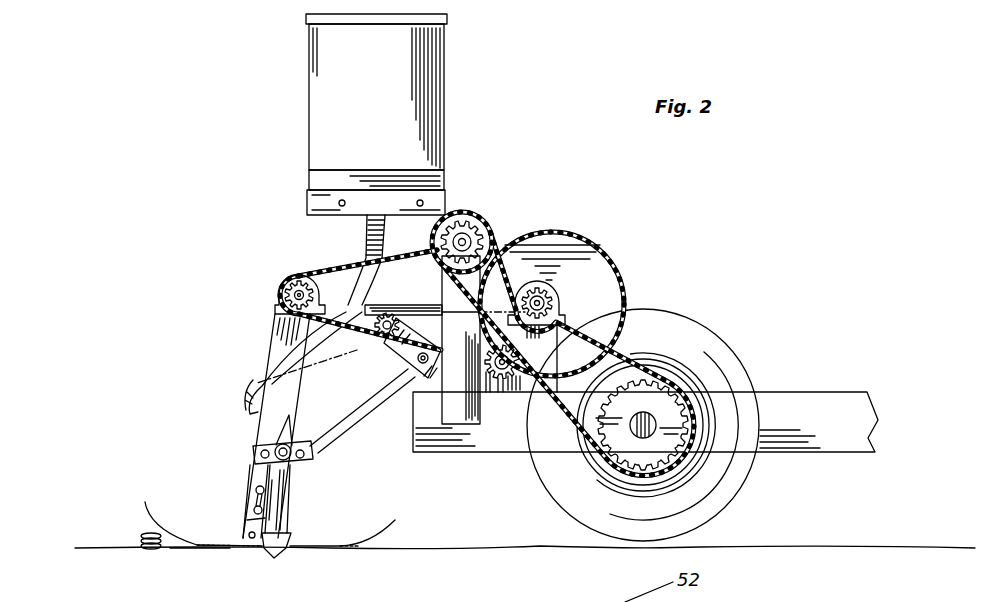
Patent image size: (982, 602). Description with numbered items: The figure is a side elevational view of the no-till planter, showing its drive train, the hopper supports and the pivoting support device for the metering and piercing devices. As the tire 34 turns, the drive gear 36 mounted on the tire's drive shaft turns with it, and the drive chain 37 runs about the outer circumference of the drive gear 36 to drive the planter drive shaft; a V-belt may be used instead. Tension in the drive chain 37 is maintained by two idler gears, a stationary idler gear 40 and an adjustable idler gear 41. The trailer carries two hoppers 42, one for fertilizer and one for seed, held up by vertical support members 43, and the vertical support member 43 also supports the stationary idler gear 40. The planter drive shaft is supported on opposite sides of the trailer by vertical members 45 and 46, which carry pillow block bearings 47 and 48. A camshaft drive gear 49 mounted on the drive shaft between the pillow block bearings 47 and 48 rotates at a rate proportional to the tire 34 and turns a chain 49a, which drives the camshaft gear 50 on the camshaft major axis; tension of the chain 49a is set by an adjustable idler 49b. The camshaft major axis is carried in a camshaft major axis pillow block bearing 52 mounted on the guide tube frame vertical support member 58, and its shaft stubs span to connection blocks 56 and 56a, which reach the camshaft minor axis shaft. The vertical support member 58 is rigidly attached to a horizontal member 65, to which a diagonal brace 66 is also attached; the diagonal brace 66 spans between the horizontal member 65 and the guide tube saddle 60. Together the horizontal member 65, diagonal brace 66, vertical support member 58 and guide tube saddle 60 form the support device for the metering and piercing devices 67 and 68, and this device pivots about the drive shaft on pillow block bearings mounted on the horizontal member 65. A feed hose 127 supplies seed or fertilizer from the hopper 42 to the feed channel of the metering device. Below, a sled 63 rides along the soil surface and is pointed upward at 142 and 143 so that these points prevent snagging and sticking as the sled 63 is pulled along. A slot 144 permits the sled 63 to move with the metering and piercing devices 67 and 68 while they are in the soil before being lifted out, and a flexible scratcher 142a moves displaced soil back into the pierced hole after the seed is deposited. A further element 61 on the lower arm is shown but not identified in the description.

The tire 34 is at (722, 340).
The drive gear 36 is at (692, 400).
The drive chain 37 is at (497, 233).
The stationary idler gear 40 is at (449, 228).
The adjustable idler gear 41 is at (498, 387).
The hopper 42 is at (446, 80).
The vertical support member 43 is at (470, 403).
The vertical member 45 is at (596, 322).
The vertical member 46 is at (543, 353).
The pillow block bearing 47 is at (614, 271).
The pillow block bearing 48 is at (560, 290).
The camshaft drive gear 49 is at (563, 265).
The chain 49a is at (337, 337).
The adjustable idler 49b is at (378, 347).
The camshaft gear 50 is at (713, 601).
The camshaft major axis pillow block bearing 52 is at (283, 291).
The connection block 56 is at (495, 596).
The connection block 56a is at (580, 601).
The guide tube frame vertical support member 58 is at (277, 338).
The guide tube saddle 60 is at (312, 465).
The lower arm 61 is at (255, 473).
The sled 63 is at (195, 549).
The horizontal member 65 is at (398, 305).
The diagonal brace 66 is at (380, 405).
The metering and piercing device 67 is at (288, 513).
The metering and piercing device 68 is at (298, 511).
The feed hose 127 is at (367, 250).
The point 142 is at (160, 515).
The flexible scratcher 142a is at (140, 538).
The point 143 is at (398, 522).
The slot 144 is at (300, 553).